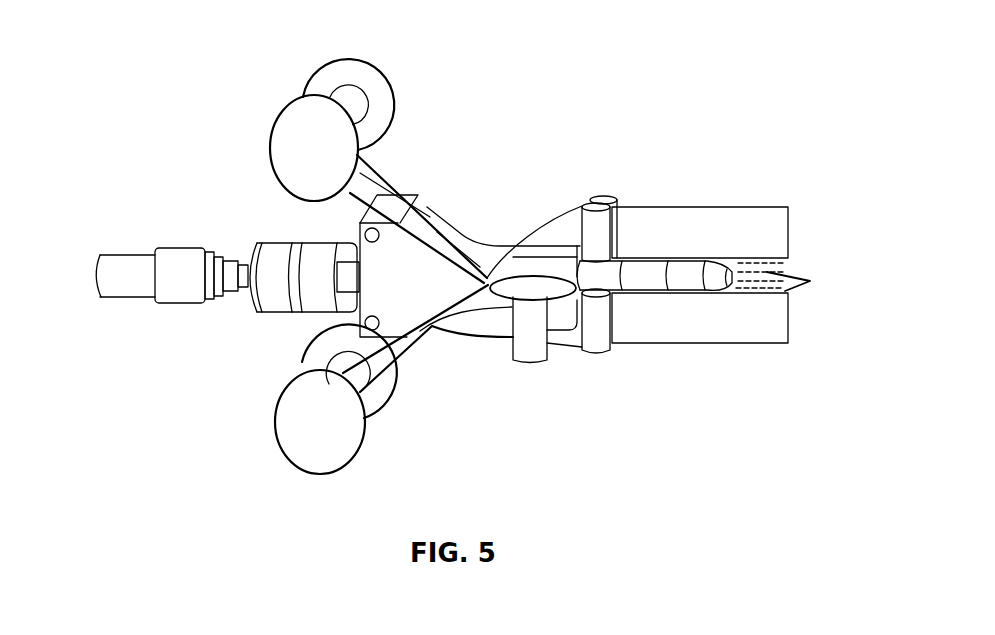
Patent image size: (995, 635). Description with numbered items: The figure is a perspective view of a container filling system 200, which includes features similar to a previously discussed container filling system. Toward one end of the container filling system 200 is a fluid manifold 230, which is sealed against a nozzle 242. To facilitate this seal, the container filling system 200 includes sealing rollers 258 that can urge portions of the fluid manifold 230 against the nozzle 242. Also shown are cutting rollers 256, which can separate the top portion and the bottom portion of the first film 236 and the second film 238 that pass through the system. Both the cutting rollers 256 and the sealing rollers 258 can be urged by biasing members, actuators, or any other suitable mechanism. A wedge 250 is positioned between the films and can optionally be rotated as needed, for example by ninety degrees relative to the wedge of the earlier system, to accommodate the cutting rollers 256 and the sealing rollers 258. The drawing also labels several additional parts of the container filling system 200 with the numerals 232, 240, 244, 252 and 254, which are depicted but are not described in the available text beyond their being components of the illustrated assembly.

The container filling system 200 is at (623, 52).
The fluid manifold 230 is at (778, 232).
The distal portion of shaft within housing 232 is at (785, 291).
The first film 236 is at (487, 320).
The second film 238 is at (383, 170).
The cable 240 is at (117, 262).
The nozzle 242 is at (303, 277).
The drive shaft 244 is at (703, 270).
The wedge 250 is at (362, 313).
The drive rods 252 is at (432, 251).
The knobs / handles 254 is at (372, 78).
The cutting rollers 256 is at (531, 357).
The sealing rollers 258 is at (593, 347).